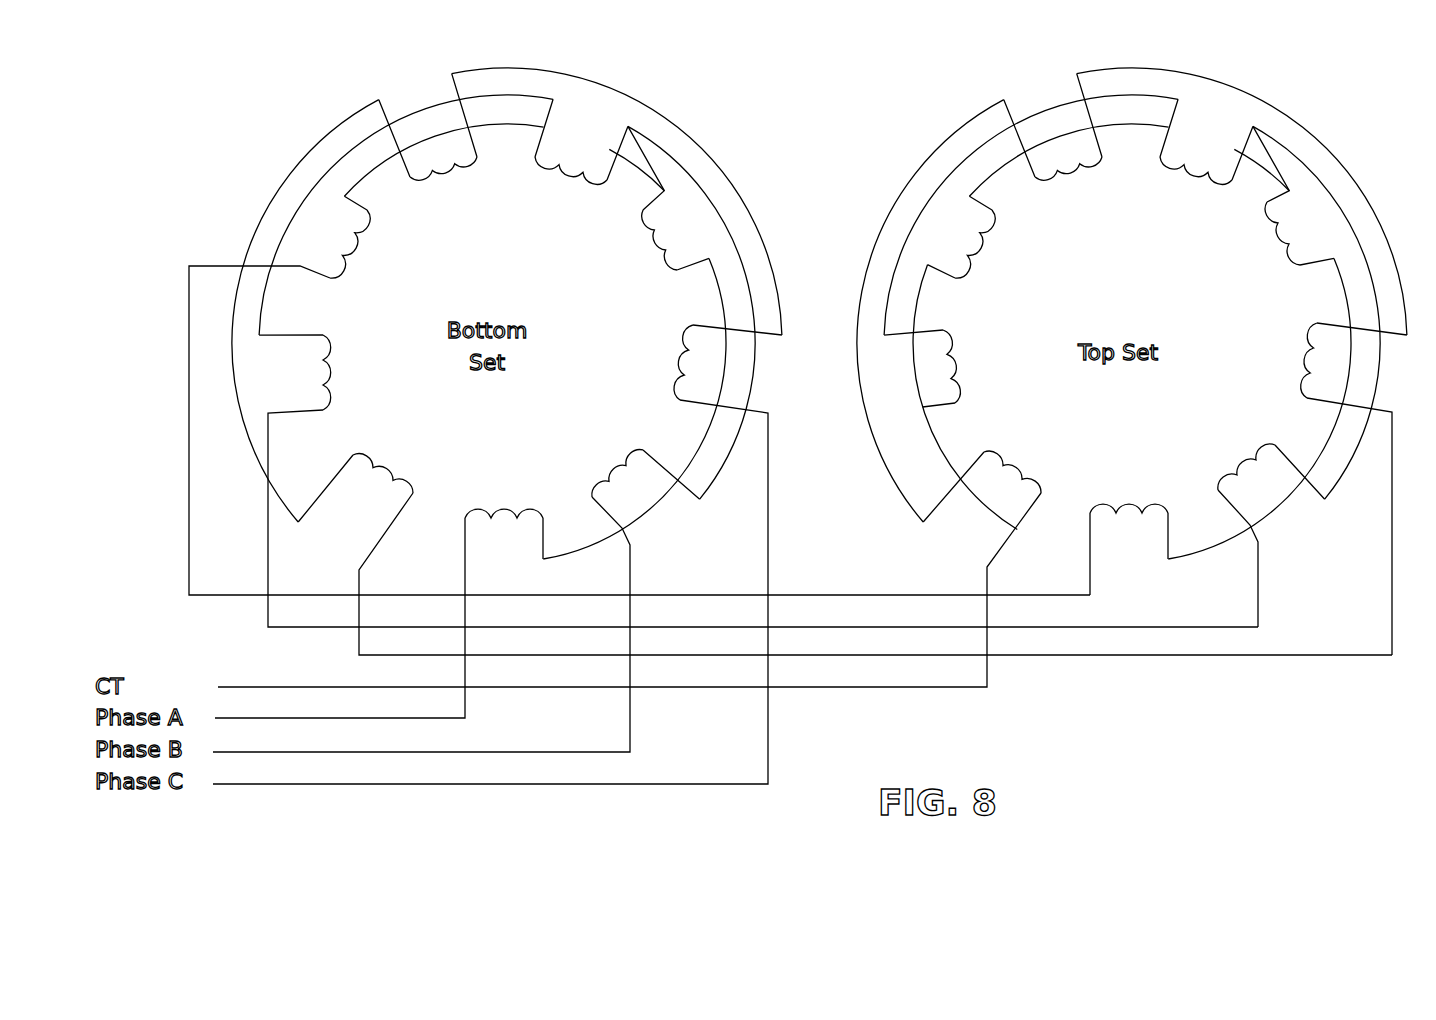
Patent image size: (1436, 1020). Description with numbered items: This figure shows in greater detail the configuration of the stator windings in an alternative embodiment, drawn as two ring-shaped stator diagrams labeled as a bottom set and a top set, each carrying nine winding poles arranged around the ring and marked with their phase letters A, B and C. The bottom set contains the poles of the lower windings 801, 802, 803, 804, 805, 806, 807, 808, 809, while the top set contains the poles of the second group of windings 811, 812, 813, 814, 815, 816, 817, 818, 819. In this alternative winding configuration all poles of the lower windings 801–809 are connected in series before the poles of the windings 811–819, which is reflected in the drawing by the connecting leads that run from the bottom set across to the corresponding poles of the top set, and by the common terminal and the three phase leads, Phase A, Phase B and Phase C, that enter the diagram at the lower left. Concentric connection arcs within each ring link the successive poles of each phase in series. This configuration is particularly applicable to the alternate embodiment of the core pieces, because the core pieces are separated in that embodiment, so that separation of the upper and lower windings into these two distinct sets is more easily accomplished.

The lower winding pole 801 is at (503, 522).
The lower winding pole 802 is at (628, 482).
The lower winding pole 803 is at (700, 370).
The lower winding pole 804 is at (672, 238).
The lower winding pole 805 is at (578, 160).
The lower winding pole 806 is at (438, 165).
The lower winding pole 807 is at (340, 246).
The lower winding pole 808 is at (320, 371).
The lower winding pole 809 is at (380, 478).
The upper winding pole 811 is at (1138, 520).
The upper winding pole 812 is at (1258, 482).
The upper winding pole 813 is at (1322, 362).
The upper winding pole 814 is at (1296, 248).
The upper winding pole 815 is at (1203, 162).
The upper winding pole 816 is at (1063, 162).
The upper winding pole 817 is at (965, 263).
The upper winding pole 818 is at (945, 360).
The upper winding pole 819 is at (1003, 480).